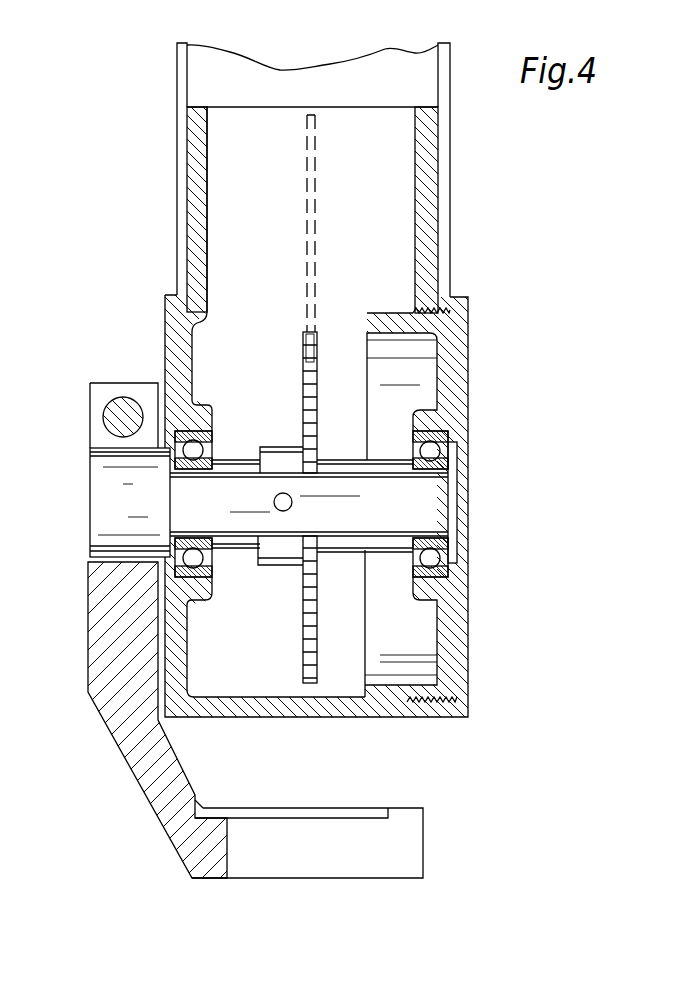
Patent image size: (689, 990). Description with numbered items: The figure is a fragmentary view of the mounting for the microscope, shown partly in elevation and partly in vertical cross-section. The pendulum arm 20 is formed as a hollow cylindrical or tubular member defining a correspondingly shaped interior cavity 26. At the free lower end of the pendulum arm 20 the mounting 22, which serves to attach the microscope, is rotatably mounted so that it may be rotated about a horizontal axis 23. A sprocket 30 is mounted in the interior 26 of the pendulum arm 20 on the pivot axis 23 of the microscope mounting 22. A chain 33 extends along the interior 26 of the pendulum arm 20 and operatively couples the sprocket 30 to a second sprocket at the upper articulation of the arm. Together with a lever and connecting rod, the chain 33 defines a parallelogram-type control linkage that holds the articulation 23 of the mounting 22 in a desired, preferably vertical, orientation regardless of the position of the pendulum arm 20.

The pendulum arm 20 is at (197, 72).
The mounting 22 is at (143, 758).
The horizontal axis 23 is at (433, 513).
The interior cavity 26 is at (436, 250).
The sprocket 30 is at (313, 388).
The chain 33 is at (313, 215).